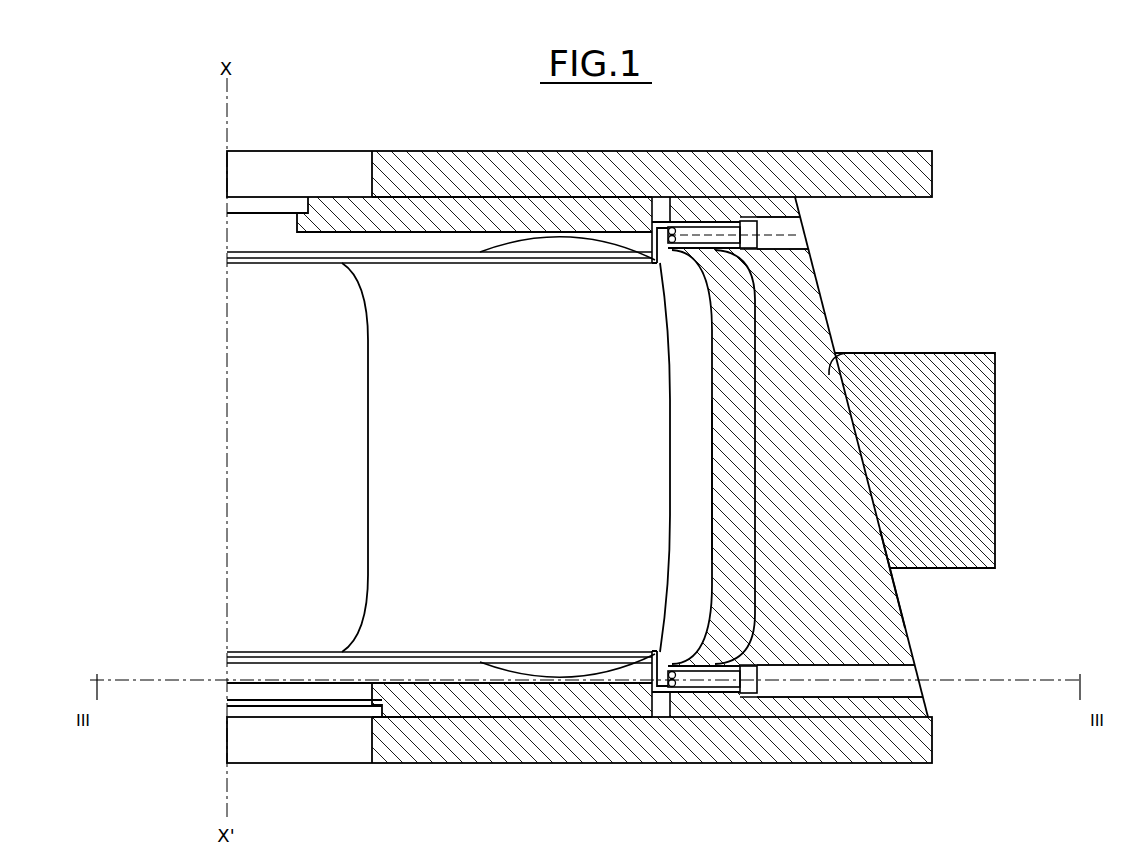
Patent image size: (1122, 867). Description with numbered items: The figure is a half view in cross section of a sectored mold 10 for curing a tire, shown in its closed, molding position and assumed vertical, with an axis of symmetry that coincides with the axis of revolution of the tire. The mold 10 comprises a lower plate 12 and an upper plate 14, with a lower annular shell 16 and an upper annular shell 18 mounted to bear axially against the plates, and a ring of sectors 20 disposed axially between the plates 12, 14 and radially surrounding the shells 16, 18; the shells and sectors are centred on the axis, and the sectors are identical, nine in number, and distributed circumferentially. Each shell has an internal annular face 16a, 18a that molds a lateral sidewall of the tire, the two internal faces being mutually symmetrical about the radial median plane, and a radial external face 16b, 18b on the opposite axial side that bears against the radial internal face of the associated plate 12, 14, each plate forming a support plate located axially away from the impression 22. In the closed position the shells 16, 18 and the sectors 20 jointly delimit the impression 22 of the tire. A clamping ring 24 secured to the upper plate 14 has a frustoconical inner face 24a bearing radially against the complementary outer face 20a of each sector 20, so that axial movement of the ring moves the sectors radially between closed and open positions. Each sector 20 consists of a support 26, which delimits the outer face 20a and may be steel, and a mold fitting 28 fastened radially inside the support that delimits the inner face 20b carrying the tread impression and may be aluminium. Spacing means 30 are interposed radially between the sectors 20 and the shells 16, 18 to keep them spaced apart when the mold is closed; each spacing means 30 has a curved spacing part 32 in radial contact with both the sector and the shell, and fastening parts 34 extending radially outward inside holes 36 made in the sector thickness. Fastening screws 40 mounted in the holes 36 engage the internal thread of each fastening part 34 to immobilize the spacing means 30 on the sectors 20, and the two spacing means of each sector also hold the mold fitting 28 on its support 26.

The sectored mold 10 is at (974, 232).
The lower plate 12 is at (527, 748).
The upper plate 14 is at (527, 168).
The lower annular shell 16 is at (418, 708).
The internal annular face of lower shell 16a is at (590, 660).
The radial external face of lower shell 16b is at (470, 720).
The upper annular shell 18 is at (418, 205).
The internal annular face of upper shell 18a is at (590, 256).
The radial external face of upper shell 18b is at (469, 197).
The sector 20 is at (795, 335).
The outer face of sector 20a is at (907, 625).
The inner face of sector 20b is at (655, 522).
The impression 22 is at (547, 474).
The clamping ring 24 is at (997, 465).
The inner face of clamping ring 24a is at (884, 538).
The support 26 is at (800, 392).
The mold fitting 28 is at (735, 330).
The spacing means 30 is at (657, 222).
The spacing part 32 is at (660, 262).
The fastening part 34 is at (668, 258).
The hole 36 is at (778, 232).
The fastening screw 40 is at (706, 228).